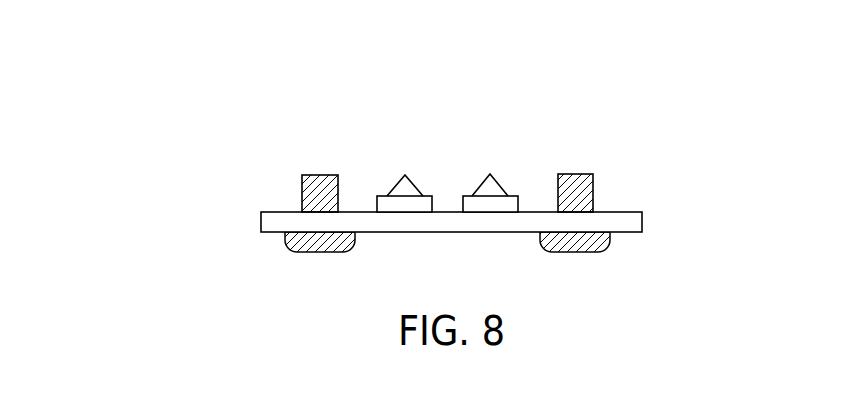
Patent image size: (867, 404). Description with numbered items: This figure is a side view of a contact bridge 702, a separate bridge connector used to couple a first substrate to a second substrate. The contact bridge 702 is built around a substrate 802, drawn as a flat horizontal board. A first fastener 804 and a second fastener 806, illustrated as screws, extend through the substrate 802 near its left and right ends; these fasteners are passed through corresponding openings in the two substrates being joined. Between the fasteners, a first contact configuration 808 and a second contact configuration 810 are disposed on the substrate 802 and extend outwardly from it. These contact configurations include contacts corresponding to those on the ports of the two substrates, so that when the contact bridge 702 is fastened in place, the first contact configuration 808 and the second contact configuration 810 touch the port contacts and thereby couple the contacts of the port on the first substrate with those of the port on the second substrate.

The contact bridge 702 is at (180, 131).
The substrate 802 is at (259, 218).
The first fastener 804 is at (312, 174).
The second fastener 806 is at (593, 174).
The first contact configuration 808 is at (405, 174).
The second contact configuration 810 is at (490, 173).